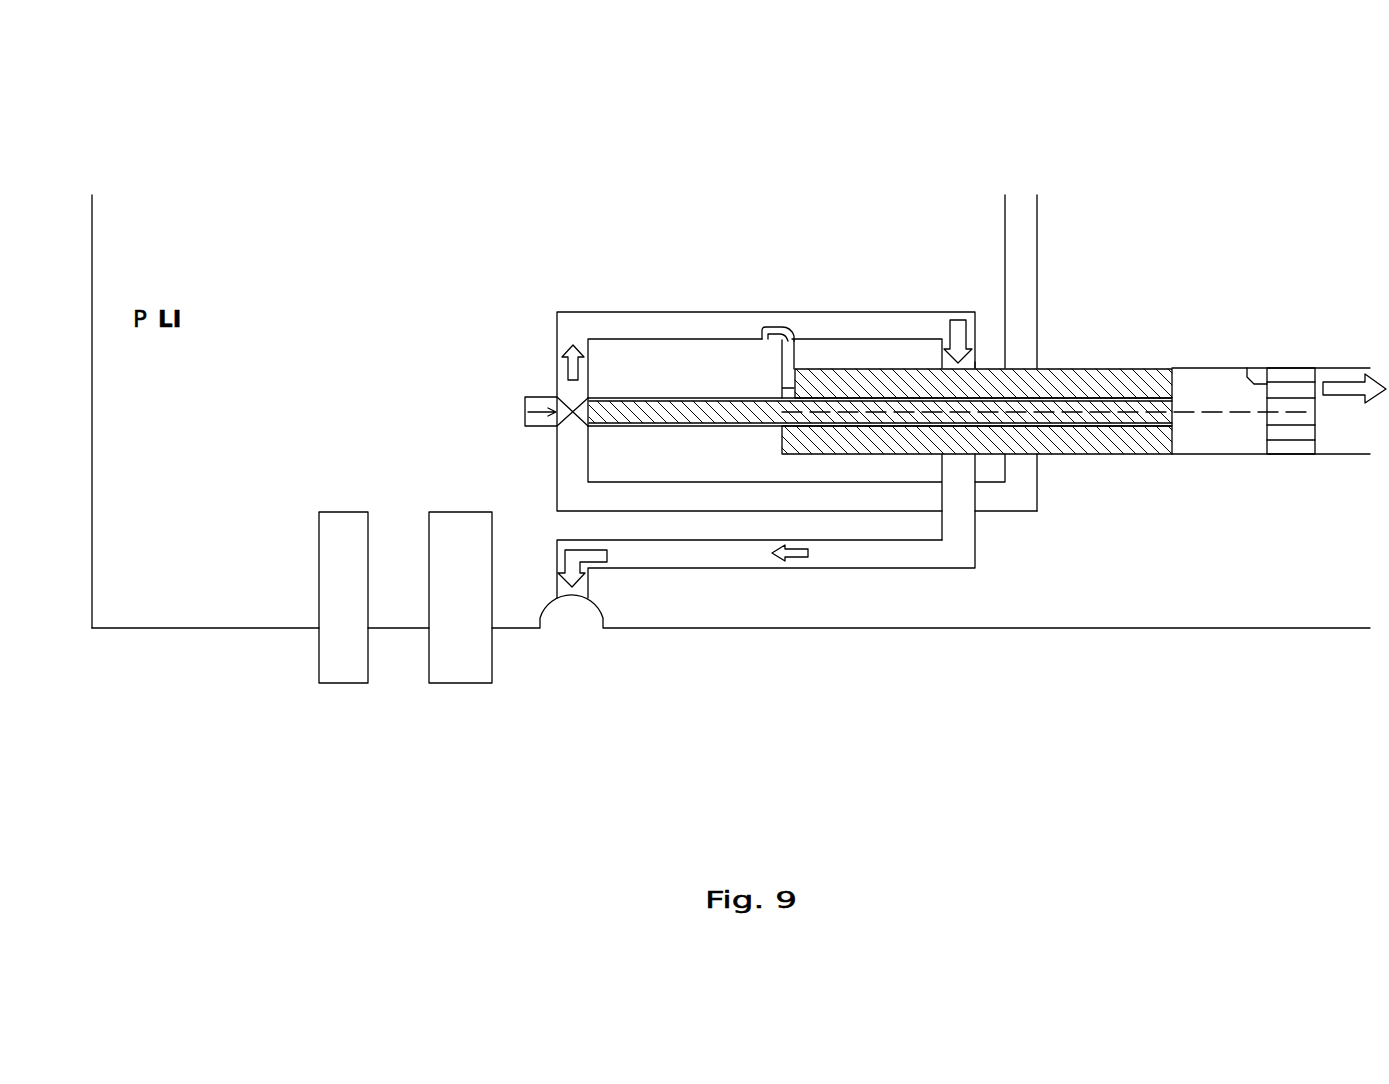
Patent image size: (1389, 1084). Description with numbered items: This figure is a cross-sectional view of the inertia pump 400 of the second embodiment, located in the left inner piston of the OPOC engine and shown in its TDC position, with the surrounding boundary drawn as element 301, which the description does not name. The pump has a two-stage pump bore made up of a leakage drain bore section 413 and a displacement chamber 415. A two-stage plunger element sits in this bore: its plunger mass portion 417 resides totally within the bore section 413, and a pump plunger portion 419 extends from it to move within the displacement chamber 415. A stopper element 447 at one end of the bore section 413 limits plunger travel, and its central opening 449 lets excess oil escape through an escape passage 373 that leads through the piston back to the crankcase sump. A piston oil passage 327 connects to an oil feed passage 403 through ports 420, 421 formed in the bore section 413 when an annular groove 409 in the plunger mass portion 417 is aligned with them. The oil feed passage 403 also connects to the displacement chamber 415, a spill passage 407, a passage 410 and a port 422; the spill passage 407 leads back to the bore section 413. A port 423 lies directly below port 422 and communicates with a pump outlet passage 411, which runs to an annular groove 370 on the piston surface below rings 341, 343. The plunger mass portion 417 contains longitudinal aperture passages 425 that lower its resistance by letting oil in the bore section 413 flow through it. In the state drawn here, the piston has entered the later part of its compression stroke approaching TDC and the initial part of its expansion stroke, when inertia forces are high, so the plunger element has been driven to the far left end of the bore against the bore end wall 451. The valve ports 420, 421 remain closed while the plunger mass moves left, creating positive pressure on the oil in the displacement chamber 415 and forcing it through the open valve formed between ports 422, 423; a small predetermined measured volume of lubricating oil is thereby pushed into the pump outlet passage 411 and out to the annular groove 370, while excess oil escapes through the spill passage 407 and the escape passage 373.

The inertia pump 400 is at (318, 162).
The fuel supply system boundary 301 is at (92, 282).
The passage 410 is at (652, 325).
The spill passage 407 is at (782, 363).
The annular groove 409 is at (775, 338).
The pump plunger portion 419 is at (650, 422).
The port 420 is at (1027, 372).
The bore end wall 451 is at (845, 452).
The piston oil passage 327 is at (1018, 222).
The port 422 is at (960, 370).
The port 421 is at (1035, 368).
The plunger mass portion 417 is at (1083, 368).
The escape passage 373 is at (1340, 368).
The central opening 449 is at (1248, 368).
The stopper element 447 is at (1317, 415).
The aperture passages 425 is at (1173, 388).
The leakage drain bore section 413 is at (1230, 450).
The oil feed passage 403 is at (953, 473).
The pump outlet passage 411 is at (1018, 470).
The displacement chamber 415 is at (697, 412).
The port 423 is at (963, 447).
The annular groove 370 is at (577, 610).
The ring 341 is at (330, 683).
The ring 343 is at (472, 683).